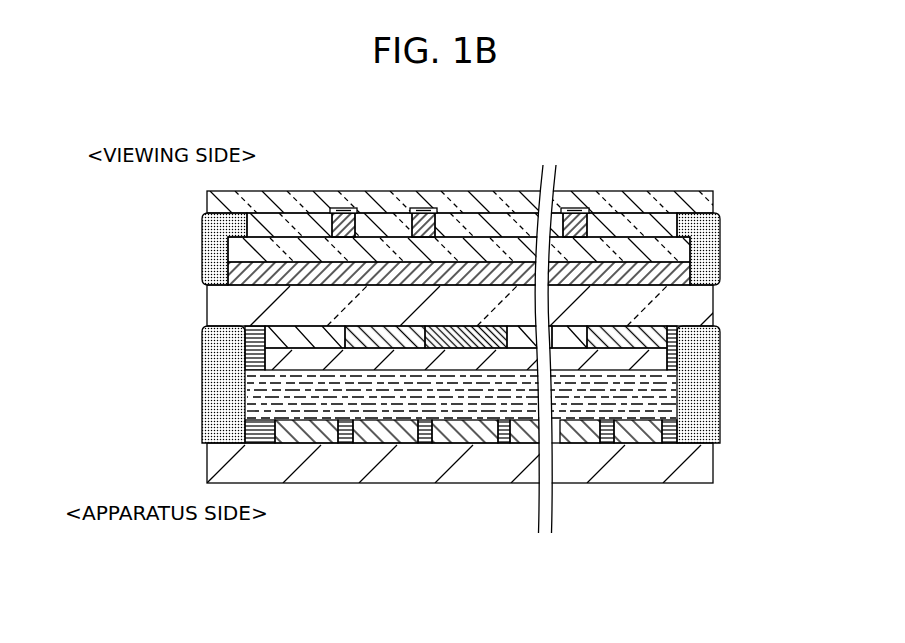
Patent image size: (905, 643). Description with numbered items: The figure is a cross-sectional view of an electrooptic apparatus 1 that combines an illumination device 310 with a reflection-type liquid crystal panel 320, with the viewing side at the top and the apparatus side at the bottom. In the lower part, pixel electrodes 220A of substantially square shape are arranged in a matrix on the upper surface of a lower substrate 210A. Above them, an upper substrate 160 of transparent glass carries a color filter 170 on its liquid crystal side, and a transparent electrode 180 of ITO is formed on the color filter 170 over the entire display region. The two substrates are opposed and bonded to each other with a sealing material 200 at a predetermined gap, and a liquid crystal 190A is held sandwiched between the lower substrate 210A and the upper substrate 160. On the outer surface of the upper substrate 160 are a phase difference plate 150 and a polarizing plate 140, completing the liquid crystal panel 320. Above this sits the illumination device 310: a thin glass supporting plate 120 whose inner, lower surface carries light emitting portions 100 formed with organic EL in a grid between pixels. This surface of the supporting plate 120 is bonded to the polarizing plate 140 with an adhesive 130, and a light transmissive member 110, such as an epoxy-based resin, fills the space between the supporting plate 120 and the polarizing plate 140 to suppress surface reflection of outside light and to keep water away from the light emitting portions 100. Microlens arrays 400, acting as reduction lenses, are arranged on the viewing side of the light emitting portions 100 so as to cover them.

The electrooptic apparatus 1 is at (735, 152).
The light emitting portions 100 is at (320, 192).
The light transmissive member 110 is at (487, 200).
The supporting plate 120 is at (211, 200).
The adhesive 130 is at (207, 252).
The polarizing plate 140 is at (614, 250).
The phase difference plate 150 is at (668, 263).
The upper substrate 160 is at (225, 308).
The color filter 170 is at (255, 340).
The transparent electrode 180 is at (258, 362).
The liquid crystal 190A is at (505, 405).
The sealing material 200 is at (210, 415).
The lower substrate 210A is at (306, 470).
The pixel electrodes 220A is at (388, 432).
The illumination device 310 is at (740, 193).
The reflection-type liquid crystal panel 320 is at (740, 290).
The microlens arrays 400 is at (348, 208).